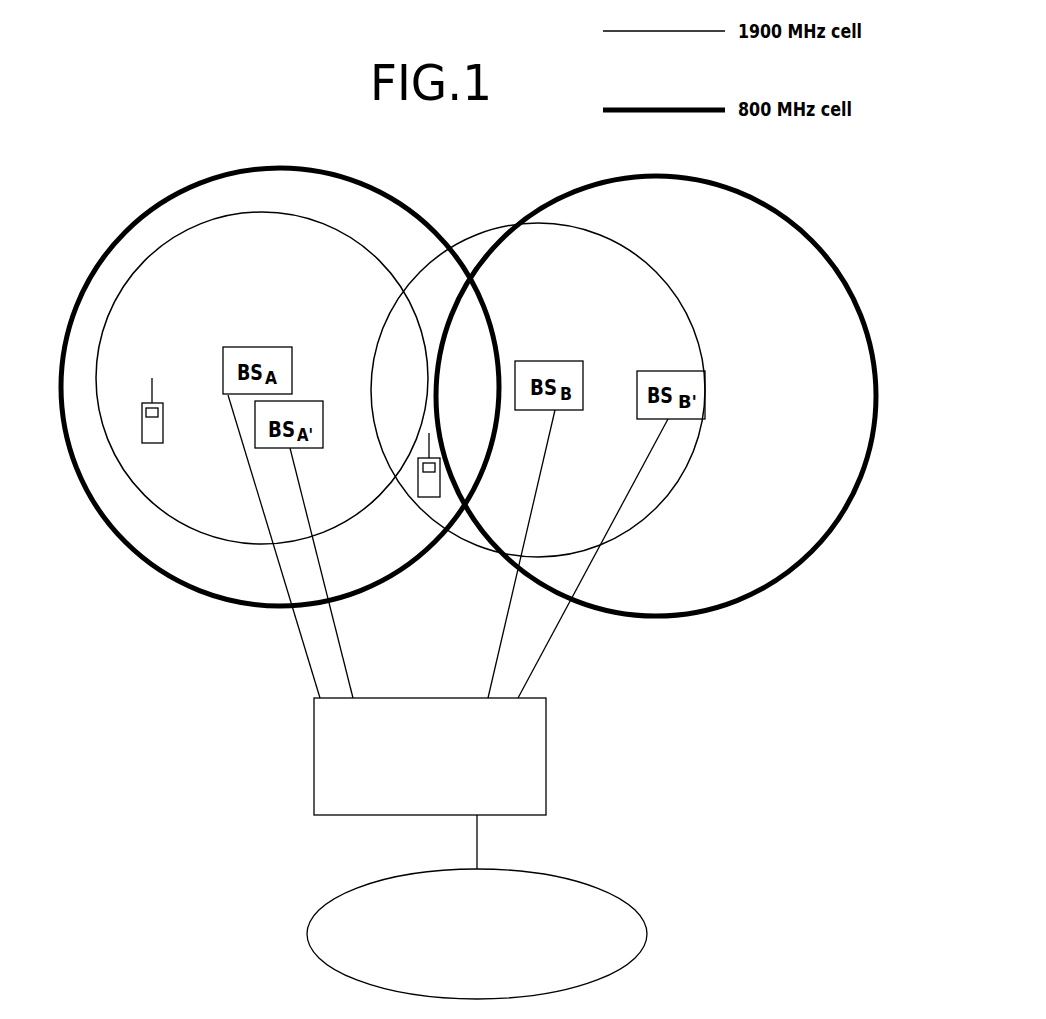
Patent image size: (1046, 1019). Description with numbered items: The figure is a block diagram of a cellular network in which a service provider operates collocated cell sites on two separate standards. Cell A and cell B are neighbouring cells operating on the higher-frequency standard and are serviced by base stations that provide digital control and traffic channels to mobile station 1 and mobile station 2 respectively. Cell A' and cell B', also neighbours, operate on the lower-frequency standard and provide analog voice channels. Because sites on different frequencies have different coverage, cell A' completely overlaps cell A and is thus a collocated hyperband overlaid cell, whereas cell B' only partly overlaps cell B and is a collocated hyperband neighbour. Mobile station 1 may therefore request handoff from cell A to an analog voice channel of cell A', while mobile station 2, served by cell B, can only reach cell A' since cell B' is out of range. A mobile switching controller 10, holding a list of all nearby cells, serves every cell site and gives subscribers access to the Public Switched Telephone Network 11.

The mobile station MS1 1 is at (180, 427).
The mobile station MS2 2 is at (405, 490).
The mobile switching controller 10 is at (537, 746).
The Public Switched Telephone Network 11 is at (588, 895).
The cell A is at (262, 378).
The cell A' is at (280, 368).
The cell B is at (538, 390).
The cell B' is at (656, 389).